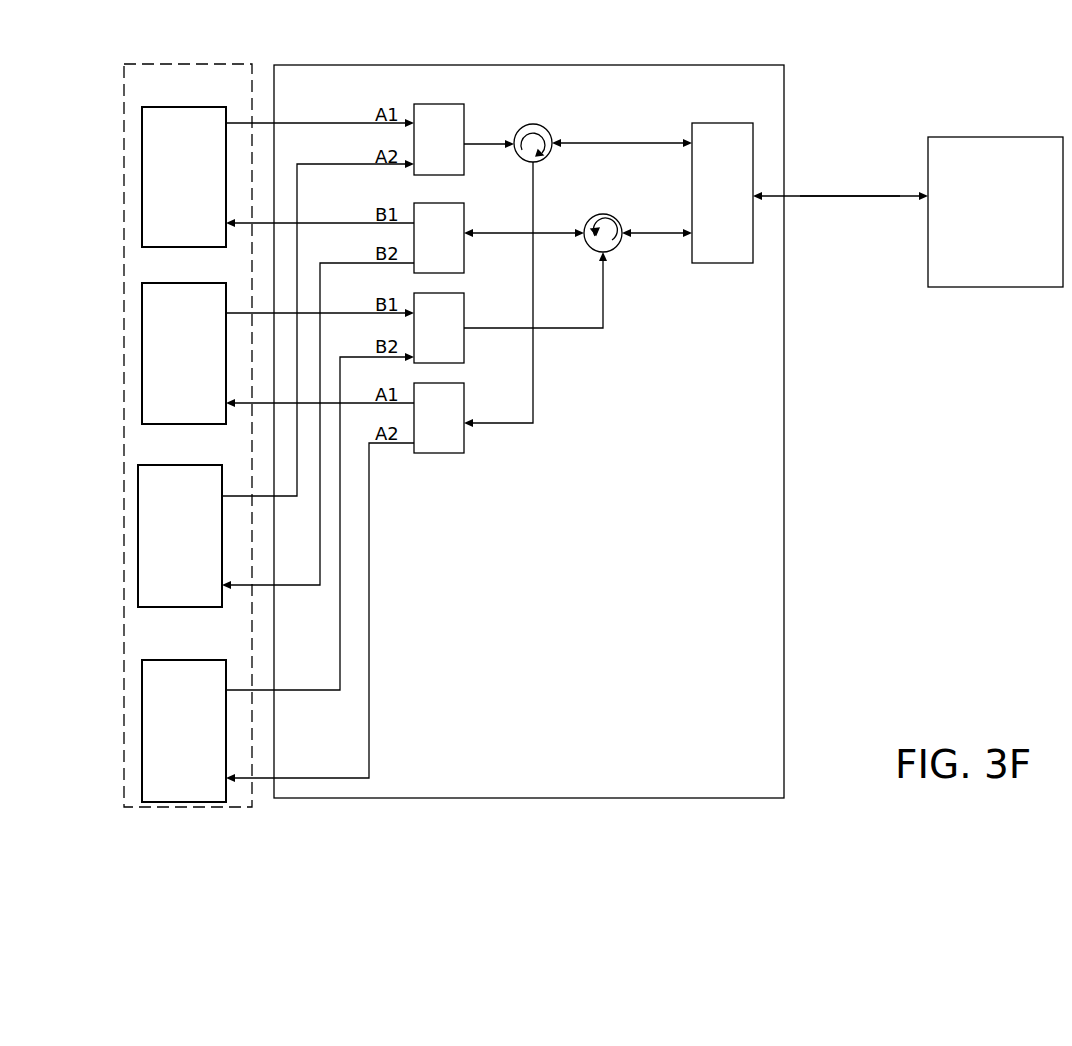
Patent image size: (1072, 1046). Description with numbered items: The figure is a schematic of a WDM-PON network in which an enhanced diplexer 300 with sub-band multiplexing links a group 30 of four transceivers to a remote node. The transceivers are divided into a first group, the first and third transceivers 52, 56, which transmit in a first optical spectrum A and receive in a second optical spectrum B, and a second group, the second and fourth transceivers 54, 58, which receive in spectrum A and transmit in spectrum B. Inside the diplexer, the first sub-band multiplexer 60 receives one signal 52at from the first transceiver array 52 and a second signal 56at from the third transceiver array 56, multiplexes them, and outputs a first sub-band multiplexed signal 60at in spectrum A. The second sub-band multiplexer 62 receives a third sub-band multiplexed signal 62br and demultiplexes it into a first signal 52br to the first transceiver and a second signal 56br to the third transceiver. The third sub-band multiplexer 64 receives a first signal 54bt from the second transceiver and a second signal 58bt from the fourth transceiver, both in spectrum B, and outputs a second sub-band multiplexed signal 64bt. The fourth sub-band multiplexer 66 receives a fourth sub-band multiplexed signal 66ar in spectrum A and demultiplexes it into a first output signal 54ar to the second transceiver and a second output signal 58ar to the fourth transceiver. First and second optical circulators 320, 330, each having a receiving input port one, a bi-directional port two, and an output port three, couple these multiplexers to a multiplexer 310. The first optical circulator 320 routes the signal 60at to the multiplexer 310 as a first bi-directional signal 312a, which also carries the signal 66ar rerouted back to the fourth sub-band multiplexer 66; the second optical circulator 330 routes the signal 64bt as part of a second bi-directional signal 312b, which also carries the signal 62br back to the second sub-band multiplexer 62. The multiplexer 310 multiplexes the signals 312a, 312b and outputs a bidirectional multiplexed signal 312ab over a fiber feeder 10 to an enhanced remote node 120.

The WDM transceiver array group 30 is at (186, 64).
The enhanced diplexer 300 is at (688, 65).
The first transceiver 52 is at (150, 107).
The second transceiver 54 is at (150, 283).
The third transceiver 56 is at (158, 465).
The fourth transceiver 58 is at (153, 660).
The first sub-band multiplexer 60 is at (424, 104).
The second sub-band multiplexer 62 is at (424, 203).
The third sub-band multiplexer 64 is at (424, 293).
The fourth sub-band multiplexer 66 is at (424, 383).
The signal from first transceiver 52at is at (329, 121).
The signal from third transceiver 56at is at (317, 162).
The first signal to first transceiver 52br is at (320, 221).
The second signal to third transceiver 56br is at (337, 261).
The first signal from second transceiver 54bt is at (348, 311).
The second signal from fourth transceiver 58bt is at (347, 355).
The first output signal to second transceiver 54ar is at (358, 401).
The second output signal to fourth transceiver 58ar is at (371, 557).
The first sub-band multiplexed signal 60at is at (486, 146).
The third sub-band multiplexed signal 62br is at (553, 235).
The second sub-band multiplexed signal 64bt is at (583, 330).
The fourth sub-band multiplexed signal 66ar is at (519, 425).
The first optical circulator 320 is at (533, 124).
The second optical circulator 330 is at (598, 214).
The first bi-directional signal 312a is at (644, 145).
The second bi-directional signal 312b is at (658, 235).
The multiplexer 310 is at (705, 263).
The fiber feeder 10 is at (819, 194).
The bidirectional multiplexed signal 312ab is at (875, 198).
The enhanced remote node 120 is at (996, 126).